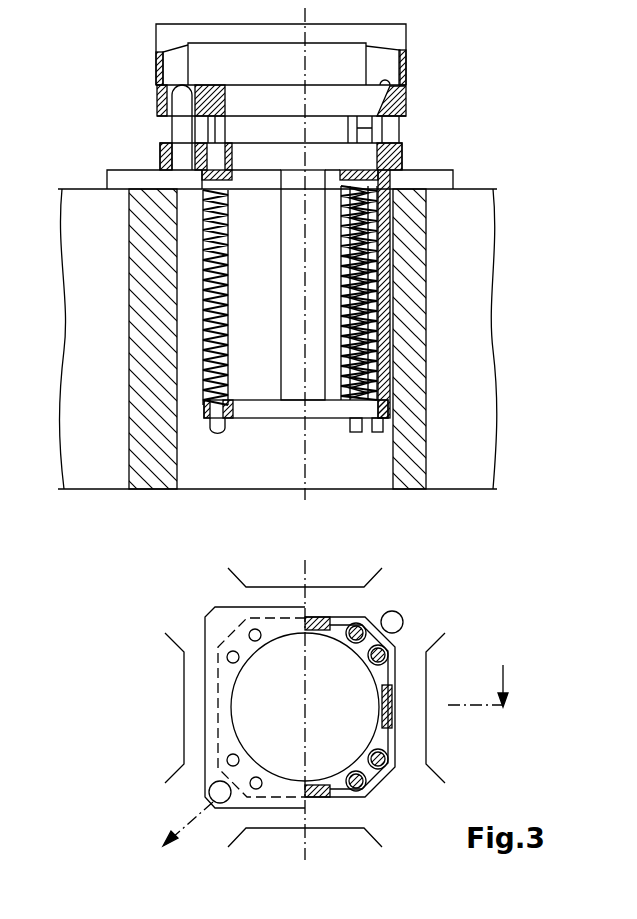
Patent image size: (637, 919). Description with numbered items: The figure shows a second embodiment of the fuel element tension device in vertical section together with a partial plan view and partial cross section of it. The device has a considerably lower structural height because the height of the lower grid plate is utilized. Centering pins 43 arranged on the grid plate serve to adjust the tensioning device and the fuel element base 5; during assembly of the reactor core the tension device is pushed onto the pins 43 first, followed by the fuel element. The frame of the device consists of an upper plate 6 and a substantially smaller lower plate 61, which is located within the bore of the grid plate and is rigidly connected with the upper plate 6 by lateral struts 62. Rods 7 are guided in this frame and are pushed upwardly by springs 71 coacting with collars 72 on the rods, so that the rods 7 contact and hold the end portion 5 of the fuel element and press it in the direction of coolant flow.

In FIG. 3a, the end portion of the fuel element 5 is at (397, 34).
In FIG. 3a, the upper plate 6 is at (160, 155).
In FIG. 3a, the rods 7 is at (355, 132).
In FIG. 3a, the centering pins 43 is at (183, 126).
In FIG. 3, the centering pins 43 is at (222, 792).
In FIG. 3a, the lower plate 61 is at (366, 418).
In FIG. 3a, the lateral struts 62 is at (292, 290).
In FIG. 3, the lateral struts 62 is at (387, 700).
In FIG. 3a, the springs 71 is at (375, 358).
In FIG. 3a, the collars 72 is at (357, 176).